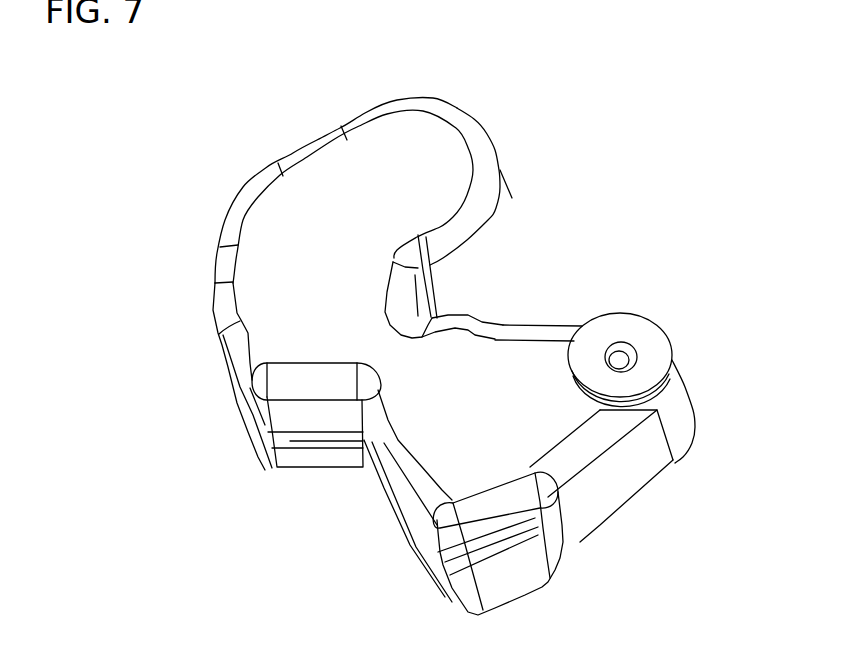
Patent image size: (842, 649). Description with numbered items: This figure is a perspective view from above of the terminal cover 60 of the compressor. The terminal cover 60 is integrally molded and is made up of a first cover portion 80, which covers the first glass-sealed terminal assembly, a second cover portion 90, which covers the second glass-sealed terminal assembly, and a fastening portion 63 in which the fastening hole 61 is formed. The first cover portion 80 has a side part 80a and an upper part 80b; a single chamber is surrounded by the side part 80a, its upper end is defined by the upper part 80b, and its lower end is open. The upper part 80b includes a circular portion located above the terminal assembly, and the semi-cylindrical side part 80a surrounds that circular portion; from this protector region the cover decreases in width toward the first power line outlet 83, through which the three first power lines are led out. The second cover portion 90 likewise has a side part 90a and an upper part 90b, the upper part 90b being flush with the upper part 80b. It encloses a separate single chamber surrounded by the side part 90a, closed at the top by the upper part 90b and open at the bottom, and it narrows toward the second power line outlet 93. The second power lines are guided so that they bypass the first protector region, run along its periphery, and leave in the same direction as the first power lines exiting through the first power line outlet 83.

The terminal cover 60 is at (601, 131).
The fastening hole 61 is at (630, 352).
The fastening portion 63 is at (538, 368).
The first cover portion 80 is at (490, 318).
The side part 80a is at (393, 500).
The upper part 80b is at (463, 437).
The first power line outlet 83 is at (532, 590).
The second cover portion 90 is at (373, 182).
The side part 90a is at (455, 376).
The upper part 90b is at (316, 188).
The second power line outlet 93 is at (322, 470).